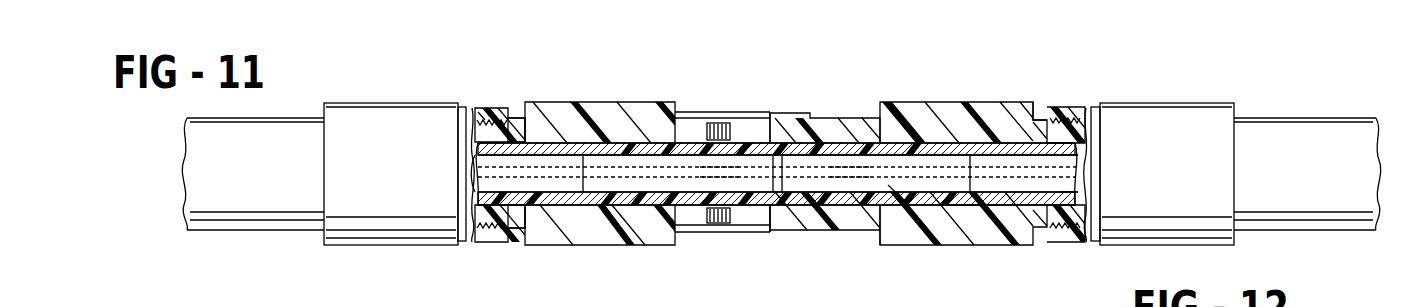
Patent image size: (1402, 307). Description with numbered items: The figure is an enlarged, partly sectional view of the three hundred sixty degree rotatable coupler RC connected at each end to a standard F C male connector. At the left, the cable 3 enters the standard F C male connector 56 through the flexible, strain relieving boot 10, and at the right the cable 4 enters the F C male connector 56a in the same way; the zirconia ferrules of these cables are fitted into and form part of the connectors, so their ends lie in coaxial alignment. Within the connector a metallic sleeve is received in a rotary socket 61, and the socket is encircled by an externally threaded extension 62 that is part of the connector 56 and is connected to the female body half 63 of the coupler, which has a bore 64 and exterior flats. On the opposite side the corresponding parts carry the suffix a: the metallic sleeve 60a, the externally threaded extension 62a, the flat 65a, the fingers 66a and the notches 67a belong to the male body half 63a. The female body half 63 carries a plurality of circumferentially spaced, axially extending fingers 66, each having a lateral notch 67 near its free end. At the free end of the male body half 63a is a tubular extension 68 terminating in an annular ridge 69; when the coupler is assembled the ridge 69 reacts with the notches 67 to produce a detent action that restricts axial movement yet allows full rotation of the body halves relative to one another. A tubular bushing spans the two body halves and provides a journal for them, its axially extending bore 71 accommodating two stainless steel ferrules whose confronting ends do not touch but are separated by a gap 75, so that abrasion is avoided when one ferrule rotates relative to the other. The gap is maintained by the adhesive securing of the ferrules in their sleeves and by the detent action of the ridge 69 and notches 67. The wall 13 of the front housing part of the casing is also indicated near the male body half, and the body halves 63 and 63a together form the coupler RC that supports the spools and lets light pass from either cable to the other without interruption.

The cable 3 is at (550, 157).
The cable 4 is at (1075, 163).
The strain relieving boot 10 is at (243, 198).
The wall 13 is at (1042, 90).
The standard F C male connector 56 is at (440, 98).
The F C male connector 56a is at (1222, 96).
The metallic sleeve 60a is at (1013, 208).
The rotary socket 61 is at (522, 137).
The externally threaded extension 62 is at (482, 232).
The externally threaded extension 62a is at (1053, 110).
The female body half 63 is at (663, 95).
The male body half 63a is at (990, 96).
The bore 64 is at (593, 243).
The flat 65a is at (970, 196).
The fingers 66 is at (750, 114).
The fingers 66a is at (884, 232).
The lateral notch 67 is at (717, 179).
The lateral notch 67a is at (845, 179).
The tubular extension 68 is at (865, 117).
The annular ridge 69 is at (780, 207).
The bore 71 is at (713, 157).
The gap 75 is at (757, 191).
The 360° rotatable coupler RC is at (838, 88).